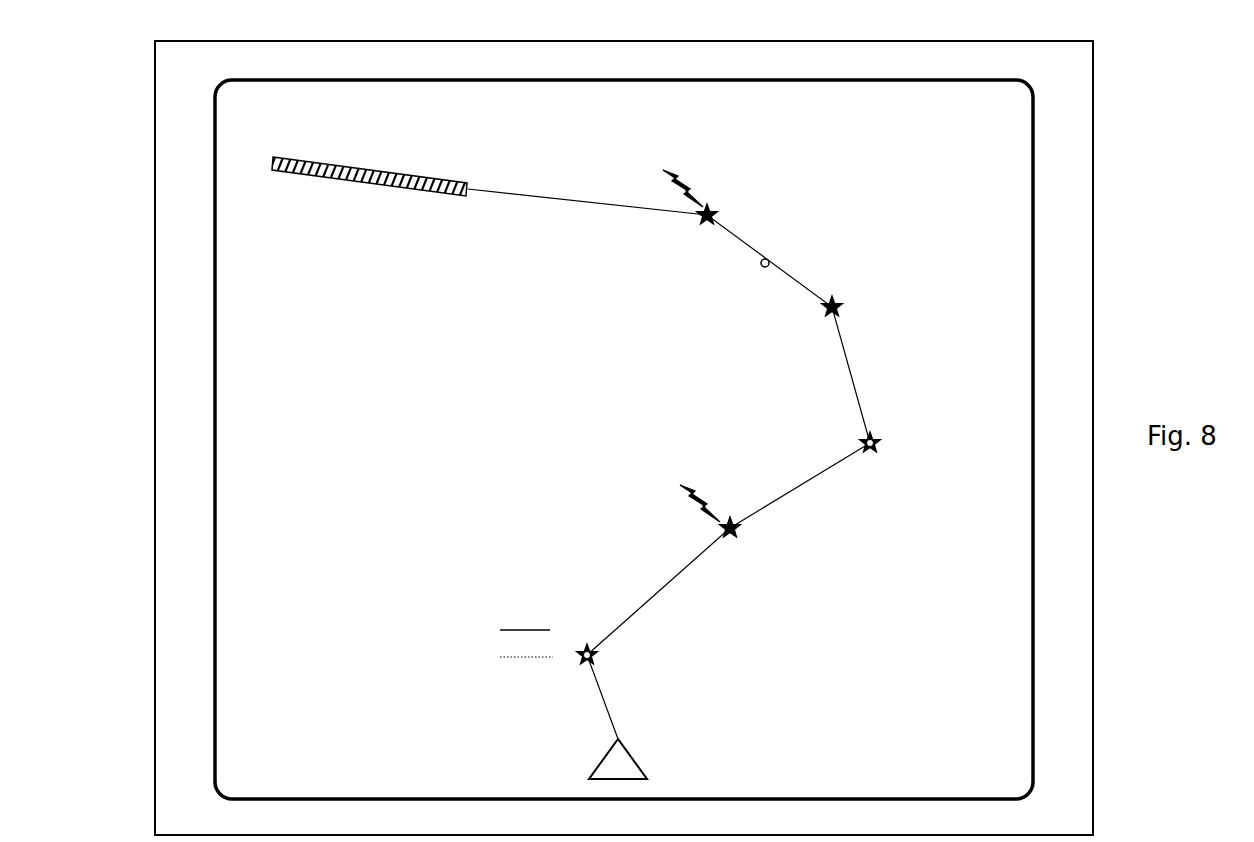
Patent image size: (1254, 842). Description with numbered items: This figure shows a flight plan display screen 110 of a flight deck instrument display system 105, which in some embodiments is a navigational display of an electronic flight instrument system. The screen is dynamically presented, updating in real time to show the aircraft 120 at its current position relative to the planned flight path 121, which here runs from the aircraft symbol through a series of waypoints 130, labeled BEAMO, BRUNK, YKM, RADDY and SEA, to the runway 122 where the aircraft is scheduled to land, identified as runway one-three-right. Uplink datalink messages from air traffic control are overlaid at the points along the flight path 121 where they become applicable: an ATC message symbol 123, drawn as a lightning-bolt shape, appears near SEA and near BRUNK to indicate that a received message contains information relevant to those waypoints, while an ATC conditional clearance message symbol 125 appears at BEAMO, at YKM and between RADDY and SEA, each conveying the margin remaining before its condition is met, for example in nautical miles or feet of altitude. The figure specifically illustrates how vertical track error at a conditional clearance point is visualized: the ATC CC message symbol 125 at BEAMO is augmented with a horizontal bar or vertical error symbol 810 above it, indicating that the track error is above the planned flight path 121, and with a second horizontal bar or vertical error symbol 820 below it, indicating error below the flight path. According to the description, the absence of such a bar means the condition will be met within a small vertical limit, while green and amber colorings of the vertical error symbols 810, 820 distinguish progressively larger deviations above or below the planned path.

The flight deck instrument display system 105 is at (154, 418).
The flight plan display screen 110 is at (213, 195).
The aircraft 120 is at (625, 748).
The planned flight path 121 is at (672, 583).
The runway 122 is at (318, 159).
The ATC message symbol 123 is at (653, 168).
The ATC conditional clearance message symbol 125 is at (688, 266).
The waypoint 130 is at (790, 207).
The vertical error symbol 810 is at (520, 616).
The vertical error symbol 820 is at (491, 664).